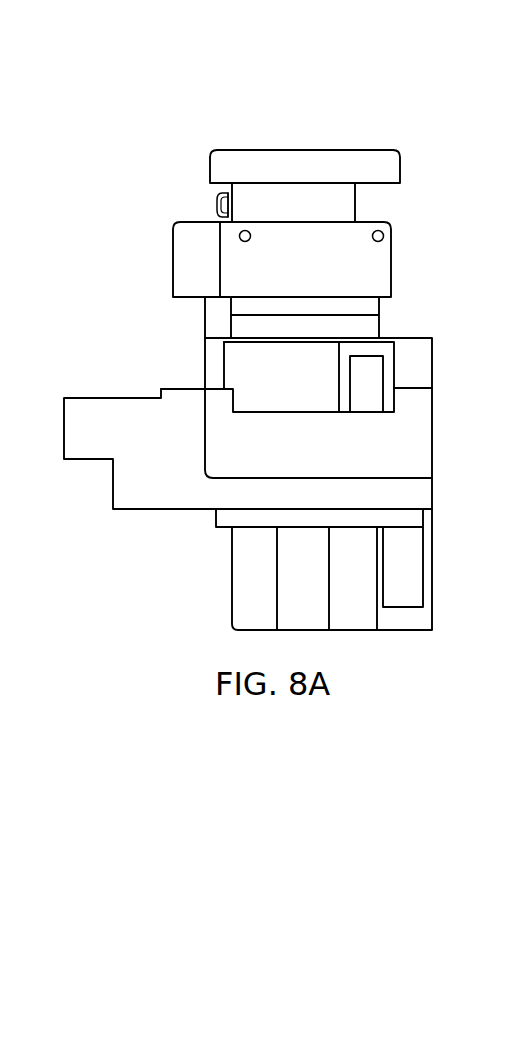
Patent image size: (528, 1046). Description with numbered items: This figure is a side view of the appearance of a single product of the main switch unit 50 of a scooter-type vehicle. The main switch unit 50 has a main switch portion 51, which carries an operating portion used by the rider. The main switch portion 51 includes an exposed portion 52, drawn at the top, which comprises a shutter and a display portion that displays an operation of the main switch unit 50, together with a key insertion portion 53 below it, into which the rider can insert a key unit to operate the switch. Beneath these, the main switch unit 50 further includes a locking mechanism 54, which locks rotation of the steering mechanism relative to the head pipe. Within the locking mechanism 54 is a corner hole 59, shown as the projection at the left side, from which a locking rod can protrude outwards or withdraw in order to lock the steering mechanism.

The main switch unit 50 is at (390, 93).
The main switch portion 51 is at (440, 138).
The exposed portion 52 is at (242, 157).
The key insertion portion 53 is at (393, 274).
The locking mechanism 54 is at (180, 493).
The corner hole 59 is at (96, 405).